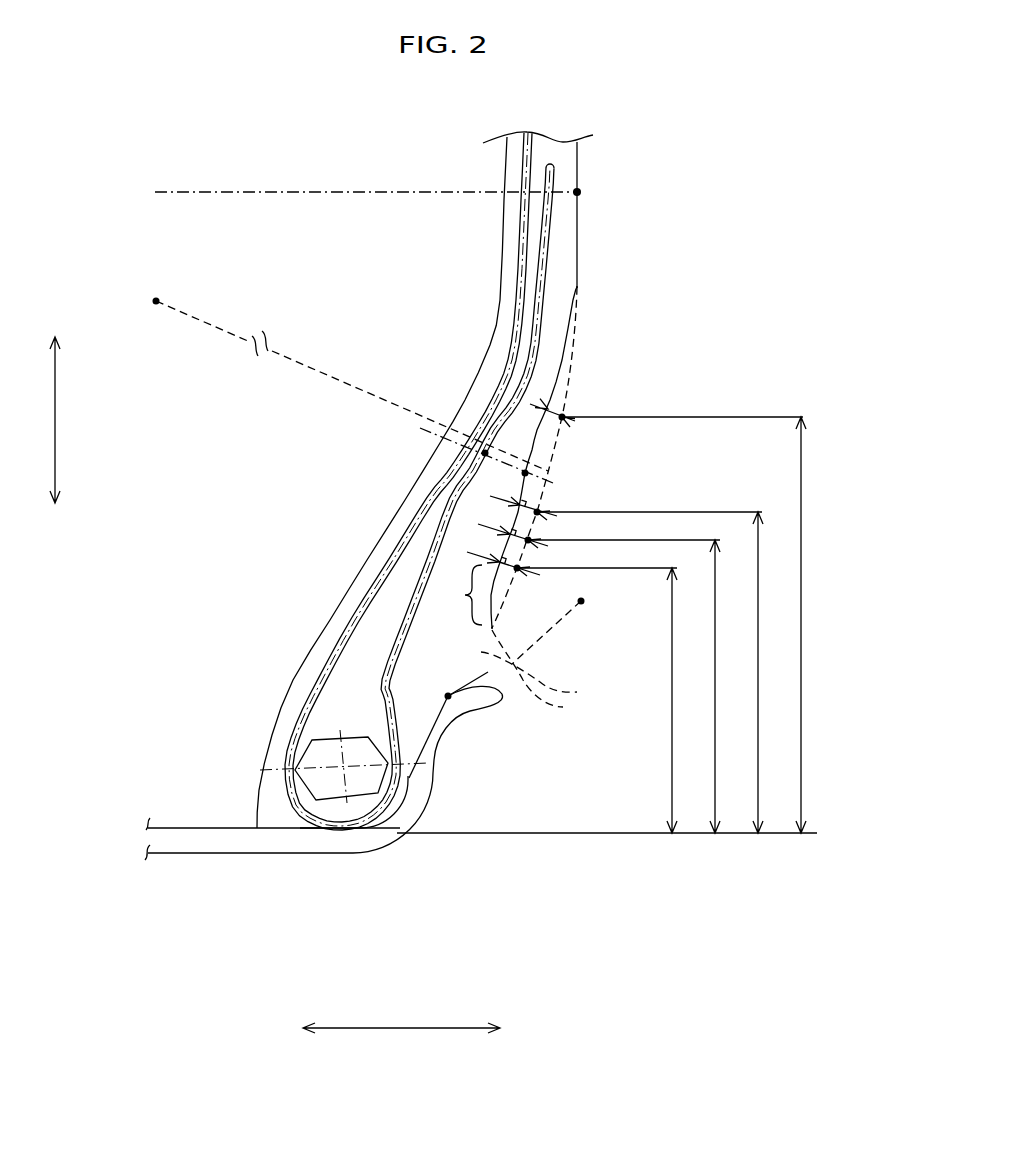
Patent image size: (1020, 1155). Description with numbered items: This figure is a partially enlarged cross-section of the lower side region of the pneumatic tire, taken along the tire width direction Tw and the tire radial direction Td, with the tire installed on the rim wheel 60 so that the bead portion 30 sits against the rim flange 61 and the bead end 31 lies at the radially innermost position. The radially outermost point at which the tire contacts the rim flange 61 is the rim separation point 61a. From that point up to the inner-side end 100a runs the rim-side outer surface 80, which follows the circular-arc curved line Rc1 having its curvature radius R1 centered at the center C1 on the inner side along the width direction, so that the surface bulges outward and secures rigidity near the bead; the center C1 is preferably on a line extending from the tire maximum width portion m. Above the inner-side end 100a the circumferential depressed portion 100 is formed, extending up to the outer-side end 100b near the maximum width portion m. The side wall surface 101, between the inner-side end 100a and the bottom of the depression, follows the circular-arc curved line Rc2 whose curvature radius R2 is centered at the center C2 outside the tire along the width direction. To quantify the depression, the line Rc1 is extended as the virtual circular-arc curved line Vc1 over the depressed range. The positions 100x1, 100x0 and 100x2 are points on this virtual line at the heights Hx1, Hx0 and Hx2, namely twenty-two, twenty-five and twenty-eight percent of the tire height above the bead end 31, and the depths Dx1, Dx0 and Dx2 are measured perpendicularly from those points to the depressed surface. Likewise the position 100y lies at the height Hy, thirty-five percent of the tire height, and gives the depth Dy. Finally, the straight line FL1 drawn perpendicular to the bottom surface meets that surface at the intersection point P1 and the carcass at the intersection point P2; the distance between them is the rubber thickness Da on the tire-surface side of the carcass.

The tire maximum width portion m is at (579, 192).
The circumferential depressed portion 100 is at (545, 454).
The outer-side end of the circumferential depressed portion 100b is at (577, 288).
The virtual circular-arc curved line Vc1 is at (572, 345).
The depth Dy is at (548, 402).
The position 100y is at (562, 417).
The intersection point P1 is at (527, 473).
The intersection point P2 is at (485, 453).
The rubber thickness Da is at (505, 470).
The straight line FL1 is at (428, 431).
The center of curvature radius R1 C1 is at (157, 297).
The curvature radius R1 is at (220, 330).
The tire radial direction Td is at (40, 420).
The depth Dx2 is at (515, 497).
The depth Dx0 is at (506, 525).
The depth Dx1 is at (491, 553).
The position 100x2 is at (545, 508).
The position 100x0 is at (535, 537).
The position 100x1 is at (524, 565).
The side wall surface 101 is at (452, 595).
The inner-side end of the circumferential depressed portion 100a is at (490, 628).
The center of curvature radius R2 C2 is at (583, 600).
The curvature radius R2 is at (548, 633).
The circular-arc curved line Rc2 is at (560, 690).
The circular-arc curved line Rc1 is at (560, 707).
The rim-side outer surface 80 is at (495, 690).
The rim separation point 61a is at (484, 712).
The bead portion 30 is at (442, 728).
The rim flange 61 is at (418, 807).
The rim wheel 60 is at (188, 843).
The bead end 31 is at (360, 833).
The height Hx1 is at (694, 700).
The height Hx0 is at (737, 686).
The height Hx2 is at (780, 672).
The height Hy is at (816, 625).
The tire width direction Tw is at (401, 1016).